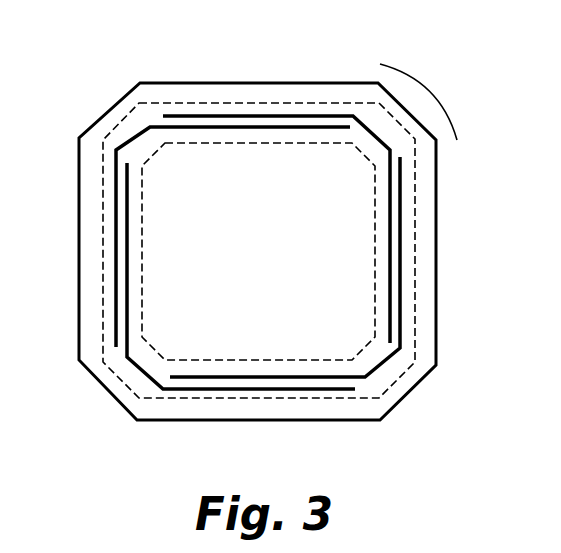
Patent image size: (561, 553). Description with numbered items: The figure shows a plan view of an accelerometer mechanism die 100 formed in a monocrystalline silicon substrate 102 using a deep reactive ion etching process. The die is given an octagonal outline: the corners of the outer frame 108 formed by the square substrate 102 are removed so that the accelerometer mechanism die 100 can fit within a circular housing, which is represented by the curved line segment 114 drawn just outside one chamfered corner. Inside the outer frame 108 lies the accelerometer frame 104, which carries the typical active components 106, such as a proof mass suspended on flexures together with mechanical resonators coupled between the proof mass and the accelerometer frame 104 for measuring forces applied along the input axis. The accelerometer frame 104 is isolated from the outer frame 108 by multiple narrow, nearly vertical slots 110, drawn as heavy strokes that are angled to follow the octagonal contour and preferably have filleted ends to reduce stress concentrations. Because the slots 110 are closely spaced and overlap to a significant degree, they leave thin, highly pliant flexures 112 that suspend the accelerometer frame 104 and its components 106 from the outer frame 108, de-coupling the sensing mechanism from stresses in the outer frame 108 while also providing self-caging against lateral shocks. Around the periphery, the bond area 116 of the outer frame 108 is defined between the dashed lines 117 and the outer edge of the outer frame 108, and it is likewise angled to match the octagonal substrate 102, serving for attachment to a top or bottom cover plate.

The accelerometer mechanism die 100 is at (80, 90).
The monocrystalline silicon substrate 102 is at (436, 187).
The accelerometer frame 104 is at (373, 348).
The active components 106 is at (375, 251).
The outer frame 108 is at (137, 383).
The slots 110 is at (401, 291).
The flexures 112 is at (353, 382).
The curved line segment 114 is at (430, 88).
The bond area 116 is at (265, 412).
The dashed lines 117 is at (348, 398).